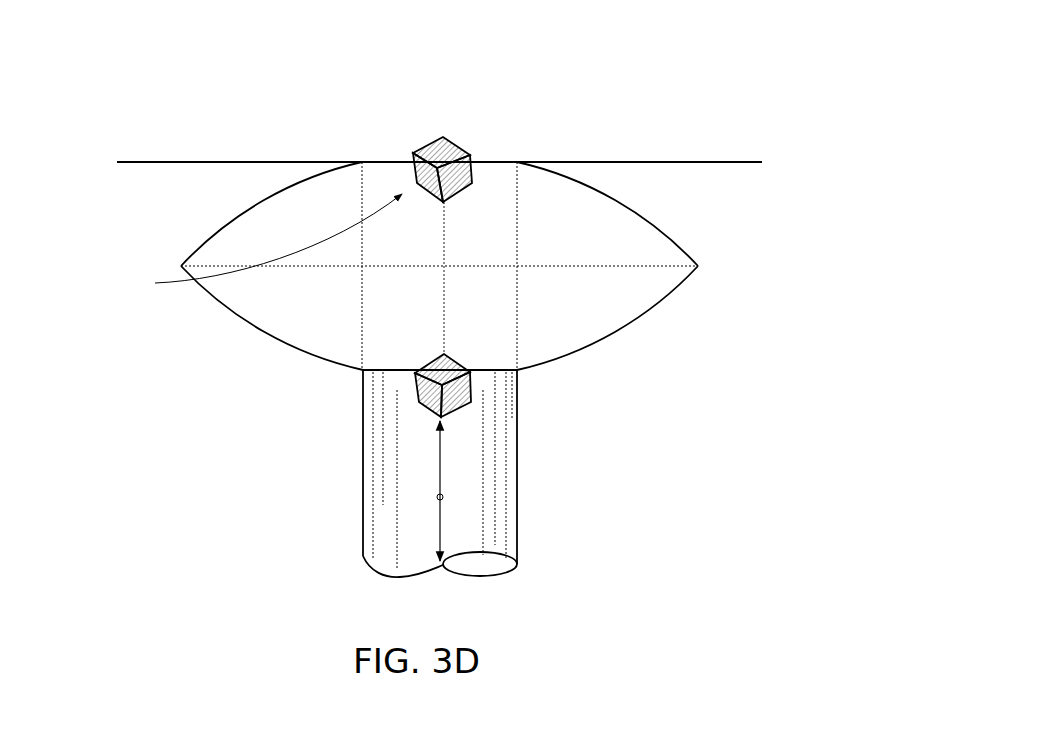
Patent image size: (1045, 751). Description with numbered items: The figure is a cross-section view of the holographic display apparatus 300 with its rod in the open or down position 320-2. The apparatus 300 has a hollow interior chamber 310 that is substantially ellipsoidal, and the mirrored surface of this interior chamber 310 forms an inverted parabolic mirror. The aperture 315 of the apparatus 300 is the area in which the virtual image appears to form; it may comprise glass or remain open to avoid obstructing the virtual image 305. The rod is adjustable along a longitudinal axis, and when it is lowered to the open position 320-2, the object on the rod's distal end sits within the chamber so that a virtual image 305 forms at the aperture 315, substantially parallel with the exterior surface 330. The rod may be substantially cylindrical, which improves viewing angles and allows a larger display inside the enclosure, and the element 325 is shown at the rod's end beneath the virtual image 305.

The holographic display apparatus 300 is at (120, 80).
The virtual image 305 is at (455, 130).
The hollow interior chamber 310 is at (197, 235).
The aperture 315 is at (259, 244).
The open position 320-2 is at (417, 443).
The object on rod 325 is at (472, 386).
The exterior surface 330 is at (738, 162).